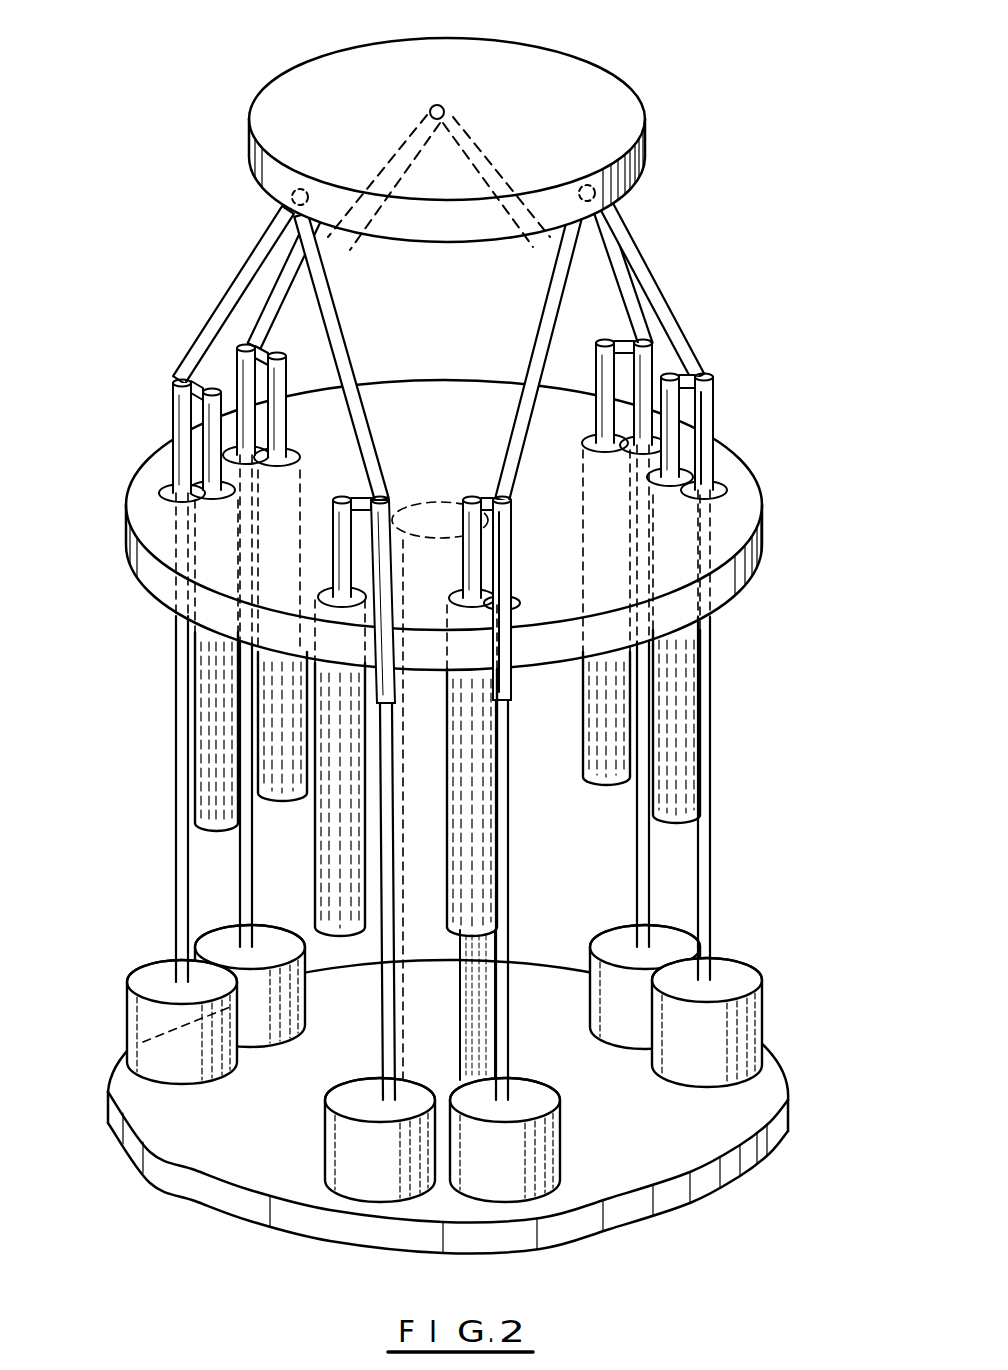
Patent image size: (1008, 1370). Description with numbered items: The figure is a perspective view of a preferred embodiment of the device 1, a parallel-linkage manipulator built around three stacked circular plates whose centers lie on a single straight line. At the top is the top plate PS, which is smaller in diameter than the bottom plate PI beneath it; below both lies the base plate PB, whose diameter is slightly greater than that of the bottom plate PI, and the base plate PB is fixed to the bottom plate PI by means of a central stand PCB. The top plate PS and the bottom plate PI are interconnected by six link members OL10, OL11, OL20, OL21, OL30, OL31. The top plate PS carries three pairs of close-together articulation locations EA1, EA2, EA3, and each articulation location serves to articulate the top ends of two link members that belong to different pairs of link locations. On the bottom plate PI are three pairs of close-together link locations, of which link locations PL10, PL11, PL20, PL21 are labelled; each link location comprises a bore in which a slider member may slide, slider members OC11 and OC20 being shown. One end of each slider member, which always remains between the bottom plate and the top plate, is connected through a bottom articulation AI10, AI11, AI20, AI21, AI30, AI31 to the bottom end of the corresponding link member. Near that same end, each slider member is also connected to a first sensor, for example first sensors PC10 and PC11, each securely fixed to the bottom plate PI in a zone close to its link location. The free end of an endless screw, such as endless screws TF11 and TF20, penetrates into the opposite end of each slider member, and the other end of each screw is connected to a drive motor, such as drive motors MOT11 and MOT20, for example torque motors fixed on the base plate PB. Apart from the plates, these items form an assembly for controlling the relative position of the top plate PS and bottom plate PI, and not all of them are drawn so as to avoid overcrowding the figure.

The device 1 is at (472, 628).
The top plate PS is at (615, 88).
The bottom plate PI is at (760, 518).
The base plate PB is at (743, 1163).
The central stand PCB is at (423, 1030).
The articulation location EA1 is at (585, 184).
The articulation location EA2 is at (437, 104).
The articulation location EA3 is at (302, 188).
The link member OL10 is at (380, 333).
The link member OL11 is at (538, 345).
The link member OL20 is at (660, 308).
The link member OL21 is at (612, 282).
The link member OL30 is at (282, 300).
The link member OL31 is at (218, 308).
The bottom articulation AI10 is at (370, 470).
The bottom articulation AI11 is at (514, 493).
The bottom articulation AI20 is at (702, 378).
The bottom articulation AI21 is at (654, 343).
The bottom articulation AI30 is at (236, 343).
The bottom articulation AI31 is at (172, 388).
The slider member OC11 is at (512, 572).
The slider member OC20 is at (715, 427).
The link location PL10 is at (372, 600).
The link location PL11 is at (510, 603).
The link location PL20 is at (727, 491).
The link location PL21 is at (612, 453).
The first sensor PC10 is at (322, 855).
The first sensor PC11 is at (496, 860).
The endless screw TF11 is at (503, 922).
The endless screw TF20 is at (706, 873).
The drive motor MOT11 is at (533, 1166).
The drive motor MOT20 is at (752, 1022).